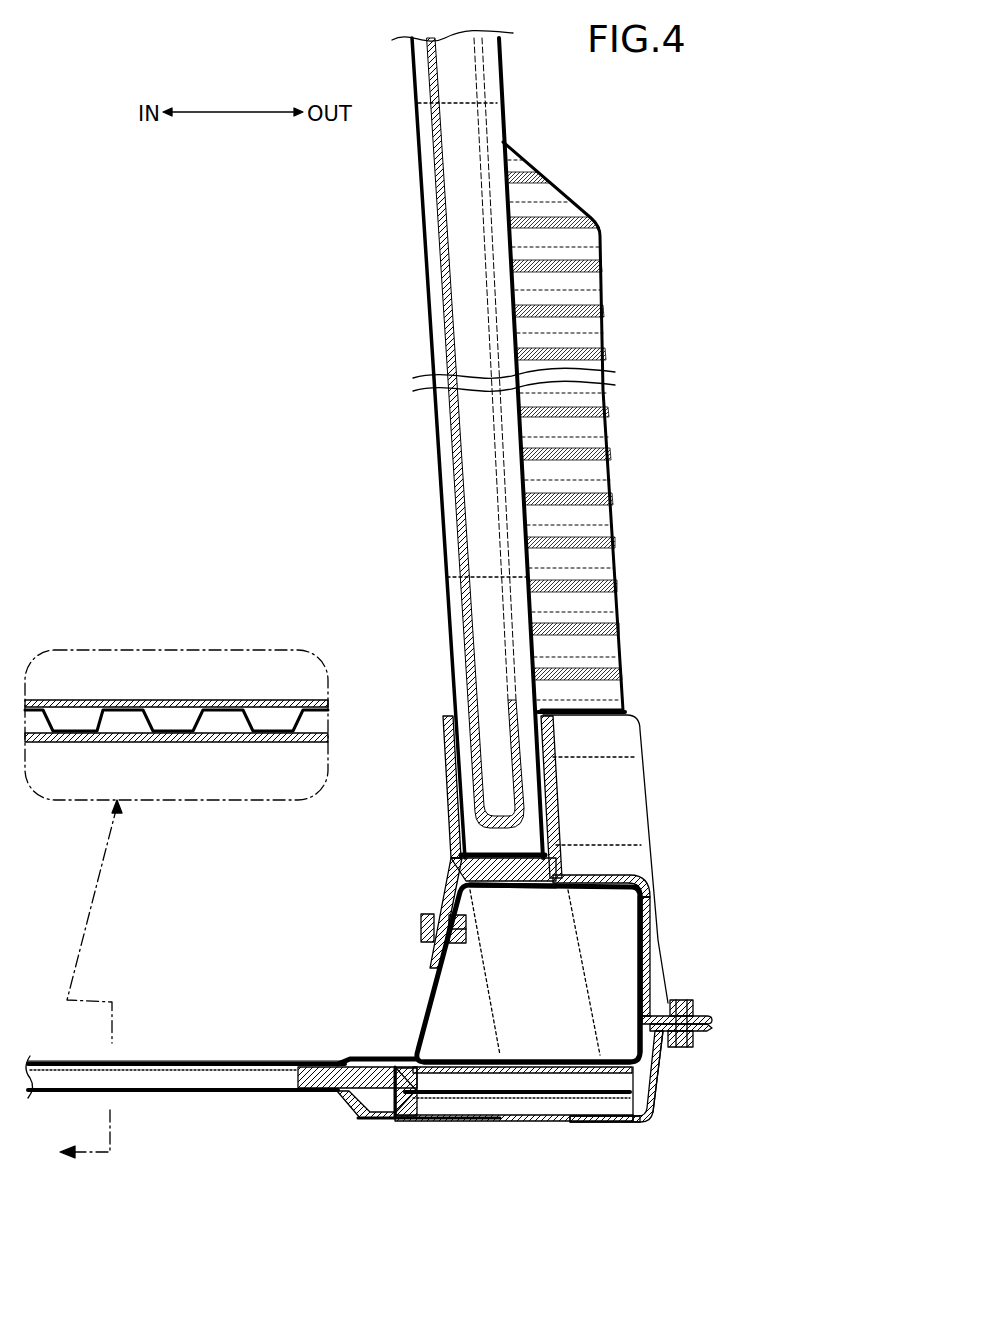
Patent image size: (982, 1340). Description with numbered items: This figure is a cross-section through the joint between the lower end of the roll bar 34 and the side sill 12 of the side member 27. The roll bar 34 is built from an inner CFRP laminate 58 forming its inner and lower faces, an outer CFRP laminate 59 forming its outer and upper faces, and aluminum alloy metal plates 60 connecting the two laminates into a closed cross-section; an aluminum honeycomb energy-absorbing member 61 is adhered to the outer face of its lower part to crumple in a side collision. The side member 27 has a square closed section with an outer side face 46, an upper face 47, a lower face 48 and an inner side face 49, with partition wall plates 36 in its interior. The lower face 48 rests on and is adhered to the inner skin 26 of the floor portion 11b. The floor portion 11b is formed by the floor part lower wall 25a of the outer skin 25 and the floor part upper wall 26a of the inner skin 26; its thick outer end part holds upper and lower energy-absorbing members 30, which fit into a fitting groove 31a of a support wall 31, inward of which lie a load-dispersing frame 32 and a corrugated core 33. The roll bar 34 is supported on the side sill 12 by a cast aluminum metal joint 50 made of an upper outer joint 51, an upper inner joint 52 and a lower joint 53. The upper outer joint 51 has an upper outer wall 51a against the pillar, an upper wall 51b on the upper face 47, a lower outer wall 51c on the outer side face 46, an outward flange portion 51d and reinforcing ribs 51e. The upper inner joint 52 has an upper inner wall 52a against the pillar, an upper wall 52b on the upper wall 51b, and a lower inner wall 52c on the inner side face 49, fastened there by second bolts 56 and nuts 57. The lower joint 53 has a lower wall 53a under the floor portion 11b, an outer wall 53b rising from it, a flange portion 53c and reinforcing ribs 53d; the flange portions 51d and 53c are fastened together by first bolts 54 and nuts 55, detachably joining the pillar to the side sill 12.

The roll bar 34 is at (400, 313).
The inner CFRP laminate 58 is at (417, 162).
The outer CFRP laminate 59 is at (505, 125).
The metal plate 60 is at (468, 80).
The energy-absorbing member 61 is at (585, 470).
The metal joint 50 is at (642, 835).
The upper outer joint 51 is at (642, 869).
The upper vehicle width direction outer wall 51a is at (553, 800).
The upper wall 51b is at (608, 885).
The lower vehicle width direction outer wall 51c is at (653, 940).
The flange portion 51d is at (703, 1018).
The reinforcing ribs 51e is at (637, 827).
The upper inner joint 52 is at (448, 842).
The upper vehicle width direction inner wall 52a is at (445, 767).
The upper wall 52b is at (495, 852).
The lower vehicle width direction inner wall 52c is at (447, 893).
The second bolts 56 is at (420, 928).
The nuts 57 is at (450, 943).
The side member 27 is at (449, 974).
The side sill 12 is at (476, 974).
The upper face 47 is at (550, 887).
The outer side face 46 is at (640, 967).
The lower face 48 is at (557, 1060).
The inner side face 49 is at (432, 1007).
The partition wall plates 36 is at (548, 986).
The lower joint 53 is at (676, 1103).
The lower wall 53a is at (602, 1128).
The vehicle width direction outer wall 53b is at (653, 1087).
The flange portion 53c is at (707, 1023).
The reinforcing ribs 53d is at (660, 1062).
The first bolts 54 is at (682, 1008).
The nuts 55 is at (692, 1040).
The energy-absorbing members 30 is at (543, 1080).
The support wall 31 is at (397, 1124).
The fitting groove 31a is at (425, 1110).
The load-dispersing frame 32 is at (370, 1118).
The outer skin 25 is at (201, 883).
The floor part lower wall 25a is at (258, 1093).
The inner skin 26 is at (228, 1056).
The floor part upper wall 26a is at (270, 1062).
The floor portion 11b is at (199, 1053).
The corrugated core 33 is at (163, 1077).